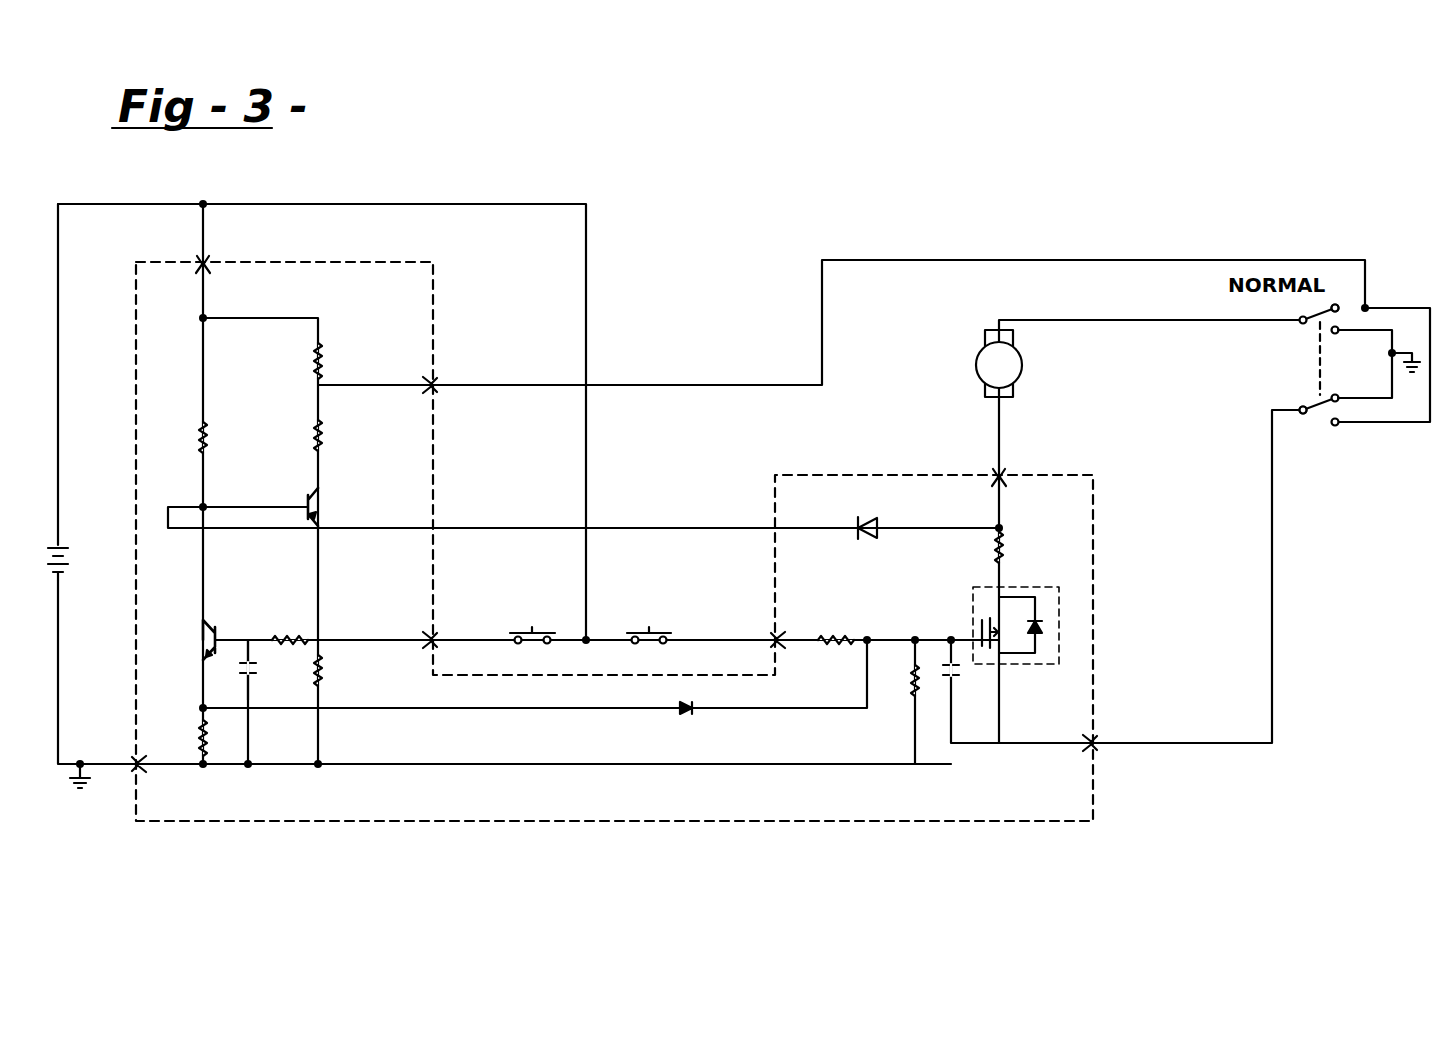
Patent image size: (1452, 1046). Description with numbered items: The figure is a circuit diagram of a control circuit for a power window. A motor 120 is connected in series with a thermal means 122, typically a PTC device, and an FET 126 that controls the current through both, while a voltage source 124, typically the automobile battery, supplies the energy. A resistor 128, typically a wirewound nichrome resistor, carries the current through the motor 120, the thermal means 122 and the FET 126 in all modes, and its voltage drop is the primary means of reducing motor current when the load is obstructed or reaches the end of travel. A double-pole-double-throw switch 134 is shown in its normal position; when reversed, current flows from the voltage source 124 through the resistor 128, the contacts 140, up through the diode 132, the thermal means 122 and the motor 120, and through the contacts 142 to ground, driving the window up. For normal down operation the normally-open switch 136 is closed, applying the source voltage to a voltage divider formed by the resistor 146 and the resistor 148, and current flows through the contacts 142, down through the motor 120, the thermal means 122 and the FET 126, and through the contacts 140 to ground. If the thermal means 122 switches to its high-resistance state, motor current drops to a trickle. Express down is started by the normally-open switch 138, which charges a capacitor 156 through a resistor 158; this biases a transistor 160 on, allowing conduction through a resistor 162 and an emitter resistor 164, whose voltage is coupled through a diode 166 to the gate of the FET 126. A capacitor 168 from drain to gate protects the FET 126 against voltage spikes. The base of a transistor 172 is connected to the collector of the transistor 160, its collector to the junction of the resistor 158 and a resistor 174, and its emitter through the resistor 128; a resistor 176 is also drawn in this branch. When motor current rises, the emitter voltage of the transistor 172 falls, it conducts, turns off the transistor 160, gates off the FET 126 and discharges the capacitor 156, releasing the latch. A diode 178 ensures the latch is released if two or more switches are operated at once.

The motor 120 is at (1024, 375).
The thermal means 122 is at (1000, 548).
The voltage source 124 is at (56, 548).
The FET 126 is at (974, 639).
The resistor 128 is at (319, 348).
The diode 132 is at (1042, 626).
The DPDT switch 134 is at (1319, 365).
The normally-open switch 136 is at (649, 630).
The normally-open switch 138 is at (532, 630).
The contacts 140 is at (1320, 418).
The contacts 142 is at (1350, 321).
The resistor 146 is at (846, 638).
The resistor 148 is at (912, 696).
The capacitor 156 is at (247, 673).
The resistor 158 is at (283, 612).
The transistor 160 is at (203, 640).
The resistor 162 is at (206, 436).
The emitter resistor 164 is at (203, 728).
The diode 166 is at (692, 712).
The capacitor 168 is at (953, 678).
The transistor 172 is at (316, 511).
The resistor 174 is at (322, 673).
The resistor 176 is at (322, 436).
The diode 178 is at (866, 538).